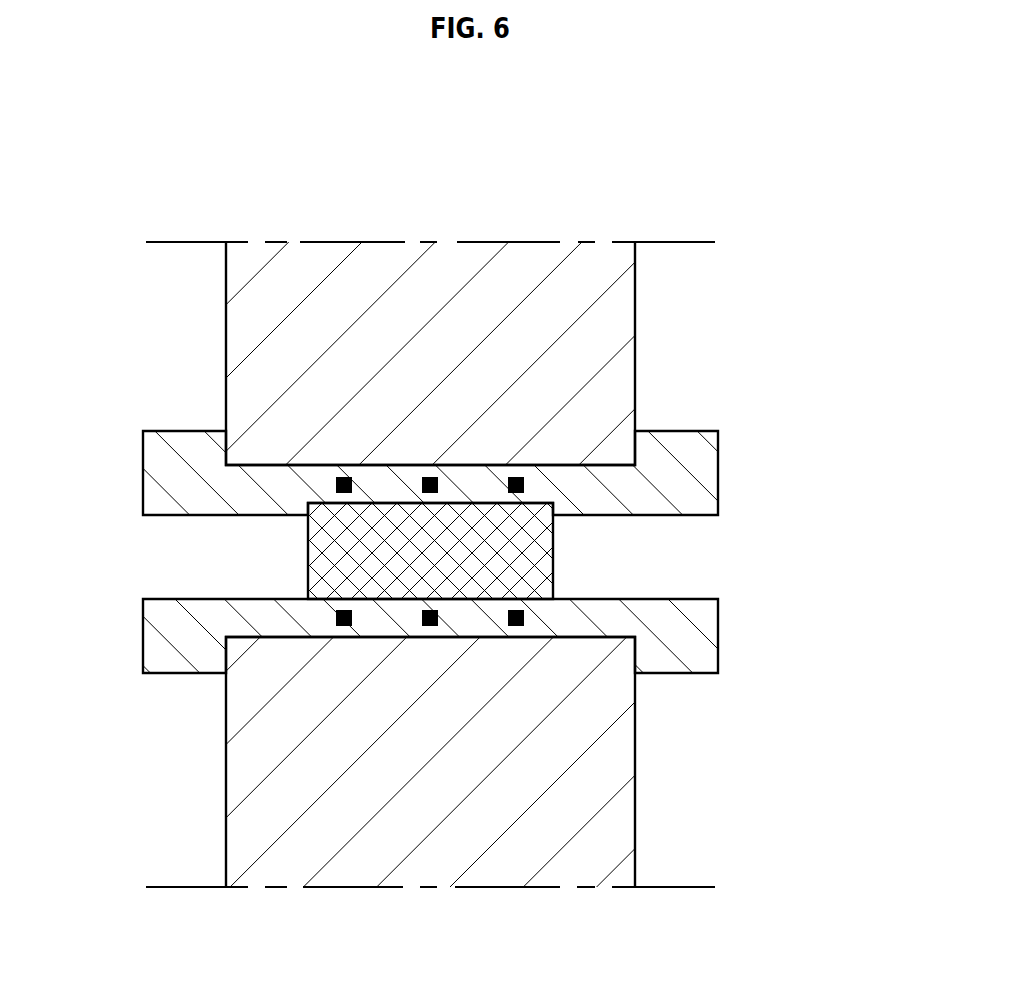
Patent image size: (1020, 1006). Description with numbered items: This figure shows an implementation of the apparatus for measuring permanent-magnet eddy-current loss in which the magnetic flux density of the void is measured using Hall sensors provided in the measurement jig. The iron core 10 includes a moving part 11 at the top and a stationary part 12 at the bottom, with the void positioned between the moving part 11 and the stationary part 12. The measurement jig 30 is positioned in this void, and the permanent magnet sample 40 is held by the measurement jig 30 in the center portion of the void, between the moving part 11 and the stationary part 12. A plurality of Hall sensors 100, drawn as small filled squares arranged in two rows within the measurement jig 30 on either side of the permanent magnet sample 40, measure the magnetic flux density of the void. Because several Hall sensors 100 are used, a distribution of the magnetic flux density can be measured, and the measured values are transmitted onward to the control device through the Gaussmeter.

The iron core 10 is at (528, 222).
The moving part 11 is at (393, 263).
The stationary part 12 is at (407, 840).
The measurement jig 30 is at (682, 482).
The permanent magnet sample 40 is at (342, 560).
The Hall sensor 100 is at (516, 477).